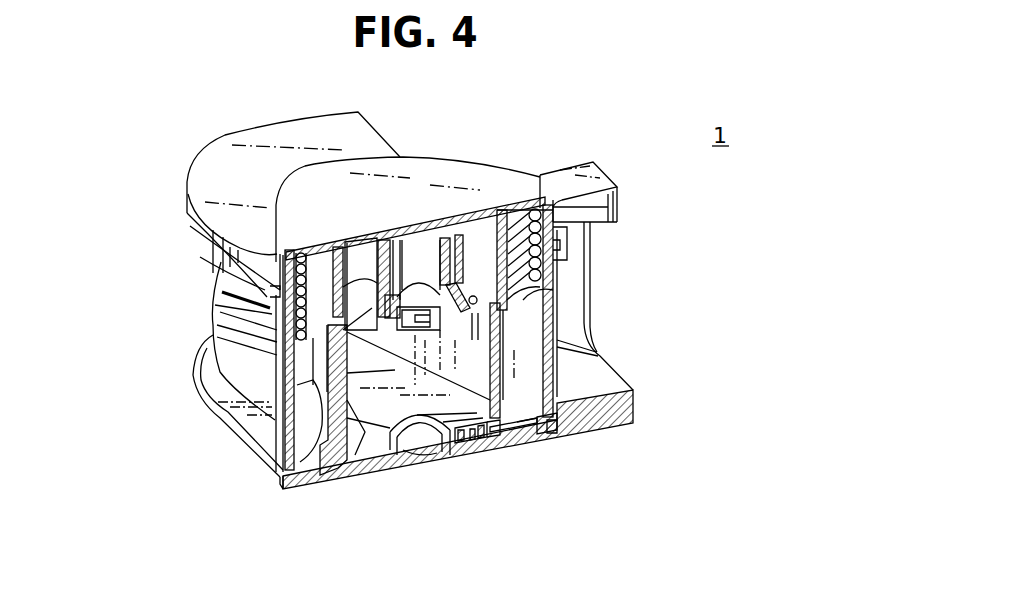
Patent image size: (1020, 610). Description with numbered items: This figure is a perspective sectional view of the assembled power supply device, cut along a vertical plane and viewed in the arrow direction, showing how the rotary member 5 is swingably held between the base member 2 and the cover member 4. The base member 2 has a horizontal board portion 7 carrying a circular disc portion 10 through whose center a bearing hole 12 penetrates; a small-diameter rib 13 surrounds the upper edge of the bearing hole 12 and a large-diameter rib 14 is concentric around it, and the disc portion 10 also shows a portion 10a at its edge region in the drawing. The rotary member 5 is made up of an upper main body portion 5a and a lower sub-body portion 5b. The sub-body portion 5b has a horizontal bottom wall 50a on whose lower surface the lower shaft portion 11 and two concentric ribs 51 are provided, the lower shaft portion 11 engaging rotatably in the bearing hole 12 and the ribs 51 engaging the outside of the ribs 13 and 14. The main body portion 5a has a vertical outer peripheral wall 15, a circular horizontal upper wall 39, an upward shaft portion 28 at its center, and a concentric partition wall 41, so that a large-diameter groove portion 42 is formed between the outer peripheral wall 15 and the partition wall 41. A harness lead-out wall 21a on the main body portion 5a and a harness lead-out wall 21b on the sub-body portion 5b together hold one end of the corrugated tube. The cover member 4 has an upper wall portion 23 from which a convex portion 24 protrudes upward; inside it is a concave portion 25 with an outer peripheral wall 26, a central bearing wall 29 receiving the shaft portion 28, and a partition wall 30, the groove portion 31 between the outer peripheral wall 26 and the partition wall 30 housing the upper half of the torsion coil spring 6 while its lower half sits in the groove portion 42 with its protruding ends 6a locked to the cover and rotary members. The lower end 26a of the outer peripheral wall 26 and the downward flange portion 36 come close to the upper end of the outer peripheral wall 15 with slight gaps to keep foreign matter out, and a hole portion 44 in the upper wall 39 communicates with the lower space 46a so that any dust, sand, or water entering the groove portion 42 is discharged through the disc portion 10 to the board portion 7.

The base member 2 is at (322, 493).
The cover member 4 is at (432, 145).
The rotary member 5 is at (200, 303).
The main body portion 5a is at (560, 291).
The sub-body portion 5b is at (522, 453).
The torsion coil spring 6 is at (573, 257).
The protruding end 6a is at (478, 296).
The board portion 7 is at (305, 425).
The disc portion 10 is at (533, 443).
The lower member end 10a is at (547, 437).
The lower shaft portion 11 is at (420, 463).
The bearing hole 12 is at (405, 468).
The small-diameter rib 13 is at (468, 462).
The large-diameter rib 14 is at (483, 427).
The outer peripheral wall 15 is at (288, 400).
The harness lead-out wall 21a is at (217, 287).
The harness lead-out wall 21b is at (205, 340).
The upper wall portion 23 is at (333, 140).
The convex portion 24 is at (477, 222).
The concave portion 25 is at (480, 240).
The outer peripheral wall 26 is at (195, 228).
The lower end 26a is at (277, 312).
The upper shaft portion 28 is at (437, 235).
The bearing wall 29 is at (384, 240).
The partition wall 30 is at (336, 250).
The large-diameter groove portion 31 is at (560, 222).
The downward flange portion 36 is at (200, 257).
The upper wall 39 is at (525, 330).
The partition wall 41 is at (273, 352).
The large-diameter groove portion 42 is at (525, 305).
The hole portion 44 is at (318, 425).
The lower space 46a is at (303, 483).
The bottom wall 50a is at (362, 430).
The ribs 51 is at (498, 460).